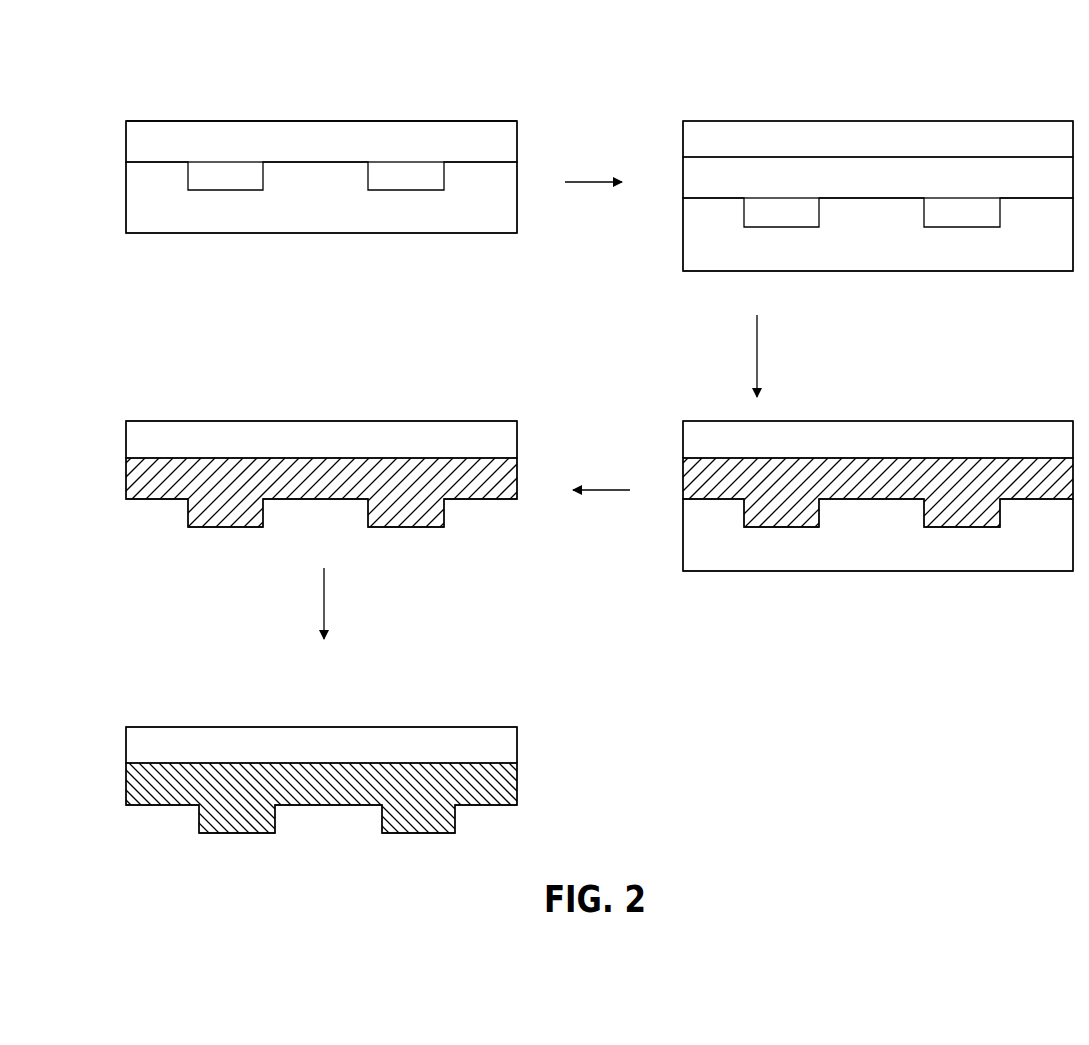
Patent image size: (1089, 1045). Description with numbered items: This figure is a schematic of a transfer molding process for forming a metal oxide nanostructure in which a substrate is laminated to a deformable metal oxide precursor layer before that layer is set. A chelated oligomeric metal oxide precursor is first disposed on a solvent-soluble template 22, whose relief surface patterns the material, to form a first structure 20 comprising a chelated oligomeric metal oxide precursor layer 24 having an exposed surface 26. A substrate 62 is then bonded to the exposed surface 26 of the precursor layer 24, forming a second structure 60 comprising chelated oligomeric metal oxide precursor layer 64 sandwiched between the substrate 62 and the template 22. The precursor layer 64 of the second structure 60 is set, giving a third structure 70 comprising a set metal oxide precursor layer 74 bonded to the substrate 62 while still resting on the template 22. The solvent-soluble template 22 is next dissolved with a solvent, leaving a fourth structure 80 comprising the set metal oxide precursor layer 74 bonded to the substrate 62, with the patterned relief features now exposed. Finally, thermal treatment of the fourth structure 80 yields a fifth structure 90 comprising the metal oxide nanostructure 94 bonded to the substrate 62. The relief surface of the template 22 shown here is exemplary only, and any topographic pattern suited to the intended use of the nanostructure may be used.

The first structure 20 is at (138, 99).
The solvent-soluble template 22 is at (325, 216).
The chelated oligomeric metal oxide precursor layer 24 is at (357, 135).
The exposed surface 26 is at (217, 120).
The second structure 60 is at (689, 100).
The substrate 62 is at (762, 135).
The chelated oligomeric metal oxide precursor layer 64 is at (1004, 180).
The third structure 70 is at (690, 395).
The set metal oxide precursor layer 74 is at (963, 487).
The fourth structure 80 is at (138, 393).
The fifth structure 90 is at (138, 703).
The metal oxide nanostructure 94 is at (451, 790).